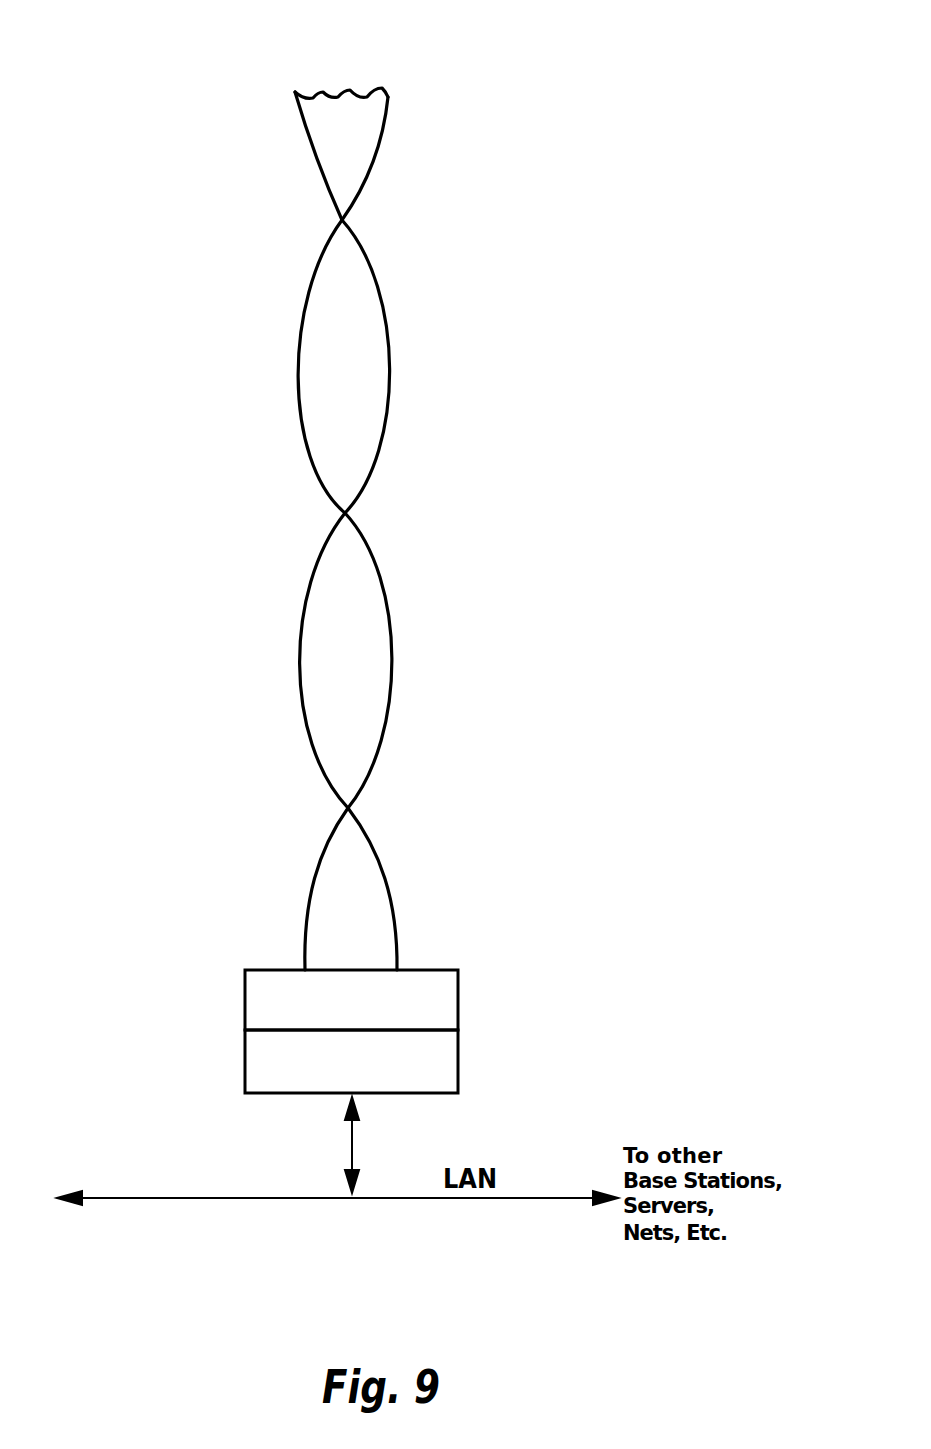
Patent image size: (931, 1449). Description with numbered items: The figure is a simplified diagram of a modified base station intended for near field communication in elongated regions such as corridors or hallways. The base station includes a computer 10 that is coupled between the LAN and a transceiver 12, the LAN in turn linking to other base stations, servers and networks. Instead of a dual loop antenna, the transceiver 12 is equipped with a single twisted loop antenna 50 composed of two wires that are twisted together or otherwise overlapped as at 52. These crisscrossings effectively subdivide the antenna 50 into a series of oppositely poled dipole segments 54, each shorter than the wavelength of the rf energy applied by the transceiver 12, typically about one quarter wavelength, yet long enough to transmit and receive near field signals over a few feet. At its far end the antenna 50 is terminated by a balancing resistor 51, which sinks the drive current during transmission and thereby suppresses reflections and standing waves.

The twisted loop antenna 50 is at (365, 490).
The balancing resistor 51 is at (352, 88).
The twist (overlap of the two wires) 52 is at (344, 220).
The dipole segment 54 is at (382, 127).
The transceiver 12 is at (458, 1000).
The computer 10 is at (458, 1060).